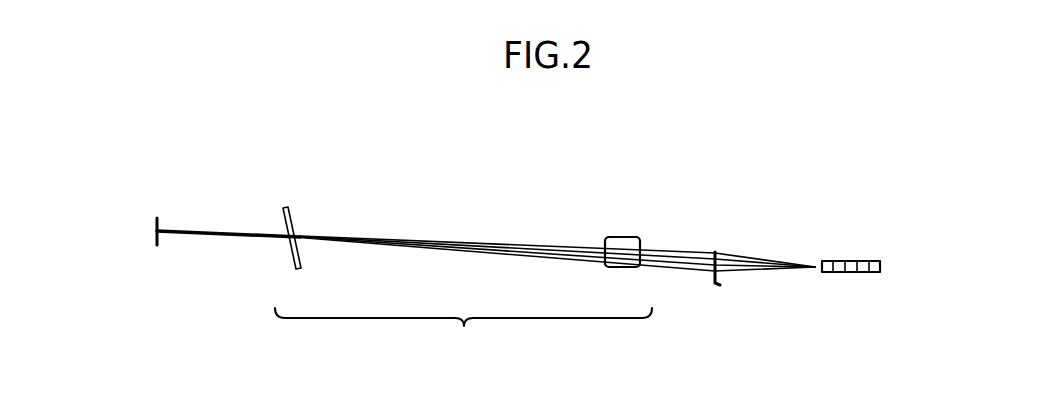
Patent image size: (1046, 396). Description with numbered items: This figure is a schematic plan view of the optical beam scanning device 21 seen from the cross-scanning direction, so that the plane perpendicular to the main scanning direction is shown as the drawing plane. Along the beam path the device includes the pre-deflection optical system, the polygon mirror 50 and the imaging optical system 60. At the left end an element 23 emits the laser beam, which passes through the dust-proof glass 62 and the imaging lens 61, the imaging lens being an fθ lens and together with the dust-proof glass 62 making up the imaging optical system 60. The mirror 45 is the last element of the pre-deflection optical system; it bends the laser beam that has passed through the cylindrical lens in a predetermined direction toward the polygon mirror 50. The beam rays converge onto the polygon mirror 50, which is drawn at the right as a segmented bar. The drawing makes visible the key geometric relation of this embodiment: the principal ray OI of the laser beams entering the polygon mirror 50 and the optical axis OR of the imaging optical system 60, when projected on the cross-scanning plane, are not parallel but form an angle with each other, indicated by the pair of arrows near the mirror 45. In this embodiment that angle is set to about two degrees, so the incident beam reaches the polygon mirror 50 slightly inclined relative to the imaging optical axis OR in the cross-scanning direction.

The optical beam scanning device 21 is at (471, 186).
The light source 23 is at (160, 229).
The dust-proof glass 62 is at (295, 217).
The imaging lens 61 is at (621, 237).
The imaging optical system 60 is at (463, 336).
The mirror 45 is at (715, 286).
The polygon mirror 50 is at (851, 260).
The optical axis of the imaging optical system OR is at (579, 250).
The principal ray of laser beams entering the polygon mirror OI is at (733, 262).